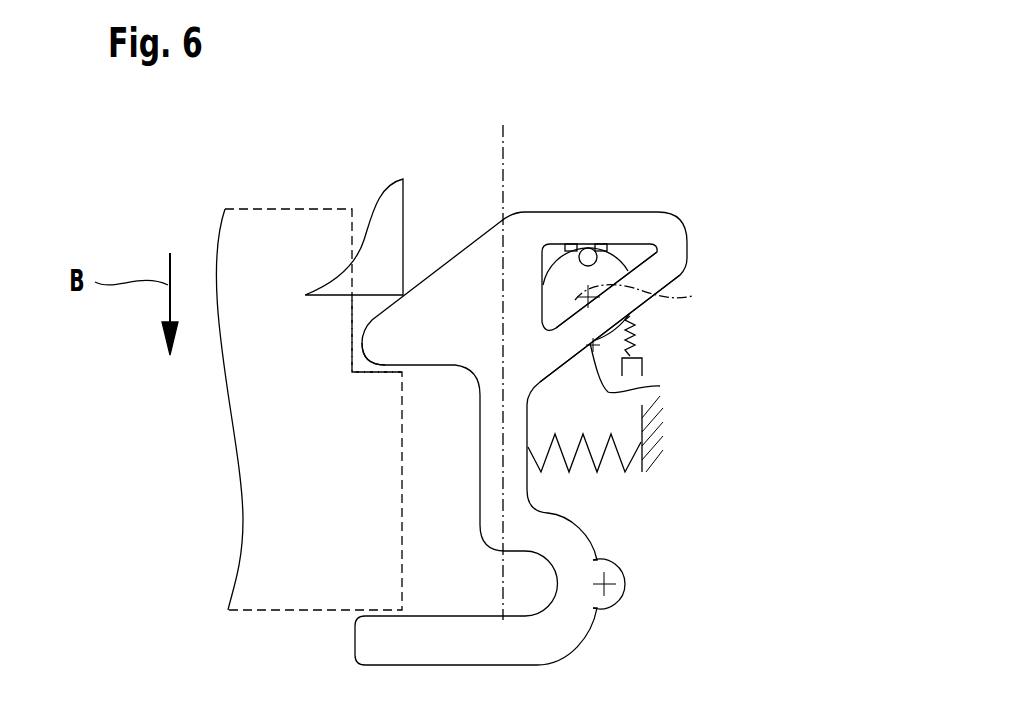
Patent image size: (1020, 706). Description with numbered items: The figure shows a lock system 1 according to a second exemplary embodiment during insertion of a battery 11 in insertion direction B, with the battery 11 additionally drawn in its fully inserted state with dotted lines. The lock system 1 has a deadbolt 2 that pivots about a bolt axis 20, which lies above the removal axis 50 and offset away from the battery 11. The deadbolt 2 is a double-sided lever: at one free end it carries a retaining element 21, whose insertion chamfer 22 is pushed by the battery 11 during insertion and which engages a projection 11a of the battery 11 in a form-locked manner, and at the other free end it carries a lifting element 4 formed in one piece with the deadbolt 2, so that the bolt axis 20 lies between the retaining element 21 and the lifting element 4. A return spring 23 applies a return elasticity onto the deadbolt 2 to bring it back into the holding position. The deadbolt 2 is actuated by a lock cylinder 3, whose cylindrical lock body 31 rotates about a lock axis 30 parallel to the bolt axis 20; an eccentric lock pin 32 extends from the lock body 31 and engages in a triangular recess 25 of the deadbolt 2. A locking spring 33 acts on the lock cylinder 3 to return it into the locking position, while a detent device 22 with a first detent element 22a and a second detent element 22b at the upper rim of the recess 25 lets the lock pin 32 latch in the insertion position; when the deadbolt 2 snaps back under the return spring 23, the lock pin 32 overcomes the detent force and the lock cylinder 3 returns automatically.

The lock system 1 is at (766, 112).
The deadbolt 2 is at (569, 540).
The lock cylinder 3 is at (647, 320).
The lifting element 4 is at (370, 643).
The battery 11 is at (336, 296).
The projection 11a is at (390, 387).
The bolt axis 20 is at (631, 579).
The retaining element 21 is at (398, 348).
The detent device 22 is at (628, 112).
The first detent element 22a is at (570, 243).
The second detent element 22b is at (603, 243).
The return spring 23 is at (647, 486).
The triangular recess 25 is at (633, 262).
The lock axis 30 is at (647, 291).
The lock body 31 is at (660, 386).
The lock pin 32 is at (587, 248).
The locking spring 33 is at (636, 346).
The removal axis 50 is at (503, 153).